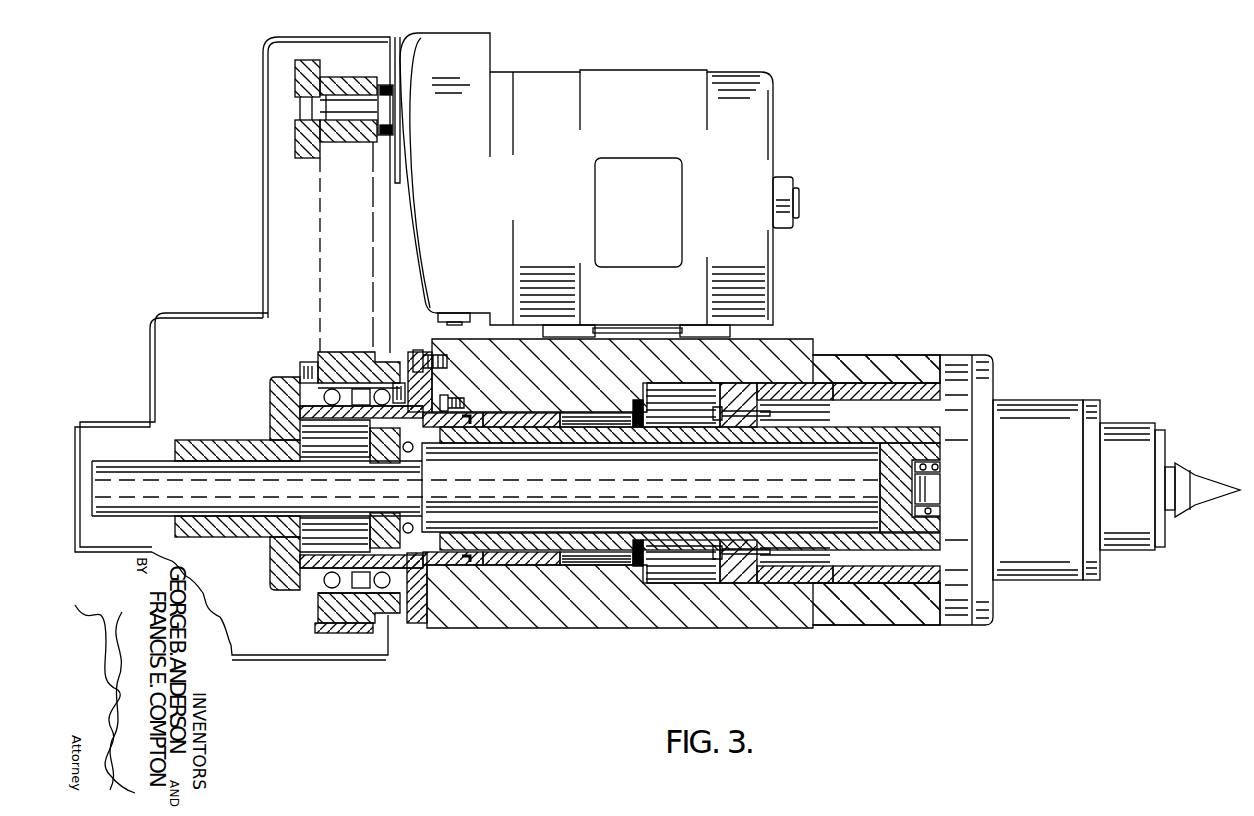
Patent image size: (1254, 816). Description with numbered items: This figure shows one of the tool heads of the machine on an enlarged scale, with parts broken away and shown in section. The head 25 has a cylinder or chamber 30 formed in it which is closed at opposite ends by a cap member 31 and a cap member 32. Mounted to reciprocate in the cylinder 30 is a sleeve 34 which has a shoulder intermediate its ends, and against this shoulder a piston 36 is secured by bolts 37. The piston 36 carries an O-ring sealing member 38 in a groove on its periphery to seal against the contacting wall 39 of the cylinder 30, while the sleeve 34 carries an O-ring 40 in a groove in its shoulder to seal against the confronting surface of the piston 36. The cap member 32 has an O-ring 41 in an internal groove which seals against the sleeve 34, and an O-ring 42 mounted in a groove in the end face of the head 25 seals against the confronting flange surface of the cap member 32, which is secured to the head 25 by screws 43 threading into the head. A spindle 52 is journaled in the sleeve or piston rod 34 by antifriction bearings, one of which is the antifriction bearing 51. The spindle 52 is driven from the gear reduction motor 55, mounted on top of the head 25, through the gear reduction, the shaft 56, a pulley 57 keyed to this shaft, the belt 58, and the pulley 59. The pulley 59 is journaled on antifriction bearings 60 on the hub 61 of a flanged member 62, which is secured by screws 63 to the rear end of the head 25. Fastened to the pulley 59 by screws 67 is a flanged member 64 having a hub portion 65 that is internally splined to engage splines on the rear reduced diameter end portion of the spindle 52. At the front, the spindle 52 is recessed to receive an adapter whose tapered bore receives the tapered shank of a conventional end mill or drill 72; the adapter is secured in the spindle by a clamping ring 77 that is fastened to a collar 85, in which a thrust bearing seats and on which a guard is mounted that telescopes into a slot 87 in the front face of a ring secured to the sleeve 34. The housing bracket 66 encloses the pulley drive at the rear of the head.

The head 25 is at (600, 617).
The cylinder or chamber 30 is at (825, 587).
The cap member 31 is at (982, 395).
The cap member 32 is at (523, 563).
The sleeve 34 is at (618, 547).
The piston 36 is at (727, 563).
The bolts 37 is at (720, 577).
The O-ring sealing member 38 is at (738, 600).
The contacting wall 39 is at (837, 383).
The O-ring 40 is at (763, 570).
The O-ring 41 is at (463, 565).
The O-ring 42 is at (452, 565).
The screws 43 is at (456, 395).
The antifriction bearing 51 is at (407, 383).
The spindle 52 is at (865, 453).
The gear reduction motor 55 is at (760, 137).
The shaft 56 is at (352, 102).
The pulley 57 is at (340, 142).
The belt 58 is at (323, 632).
The pulley 59 is at (323, 357).
The antifriction bearings 60 is at (317, 588).
The hub 61 is at (287, 587).
The flanged member 62 is at (415, 617).
The screws 63 is at (420, 353).
The flanged member 64 is at (280, 562).
The hub portion 65 is at (232, 448).
The housing bracket 66 is at (263, 247).
The screws 67 is at (300, 375).
The end mill or drill 72 is at (1195, 467).
The clamping ring 77 is at (1158, 553).
The collar 85 is at (1123, 432).
The slot 87 is at (1087, 577).